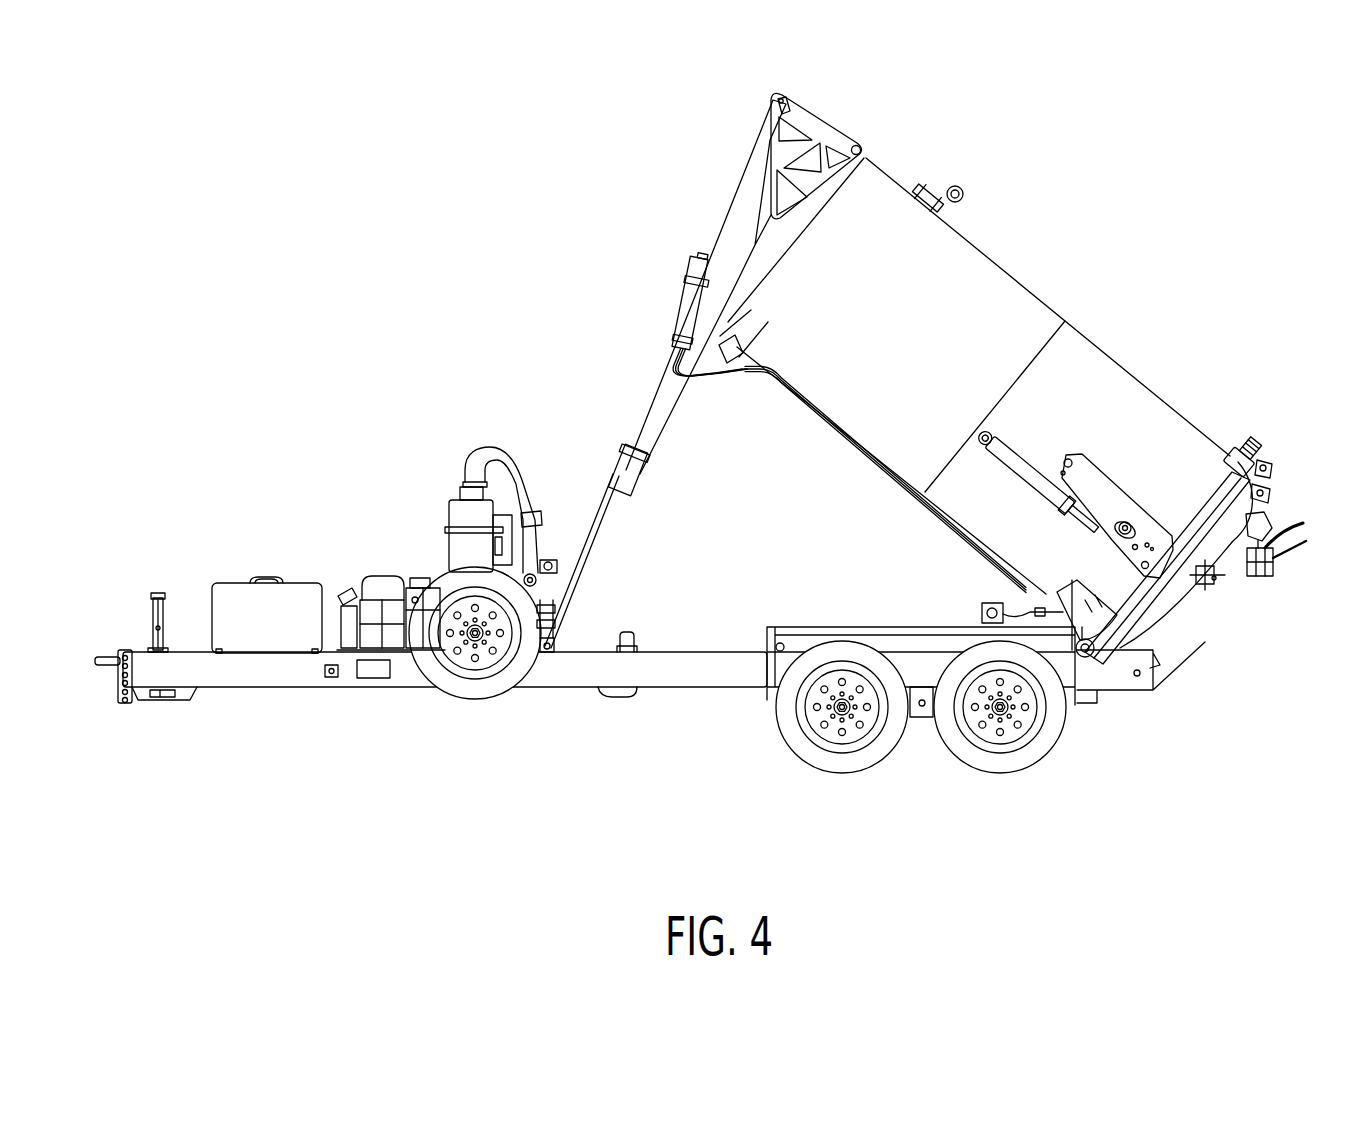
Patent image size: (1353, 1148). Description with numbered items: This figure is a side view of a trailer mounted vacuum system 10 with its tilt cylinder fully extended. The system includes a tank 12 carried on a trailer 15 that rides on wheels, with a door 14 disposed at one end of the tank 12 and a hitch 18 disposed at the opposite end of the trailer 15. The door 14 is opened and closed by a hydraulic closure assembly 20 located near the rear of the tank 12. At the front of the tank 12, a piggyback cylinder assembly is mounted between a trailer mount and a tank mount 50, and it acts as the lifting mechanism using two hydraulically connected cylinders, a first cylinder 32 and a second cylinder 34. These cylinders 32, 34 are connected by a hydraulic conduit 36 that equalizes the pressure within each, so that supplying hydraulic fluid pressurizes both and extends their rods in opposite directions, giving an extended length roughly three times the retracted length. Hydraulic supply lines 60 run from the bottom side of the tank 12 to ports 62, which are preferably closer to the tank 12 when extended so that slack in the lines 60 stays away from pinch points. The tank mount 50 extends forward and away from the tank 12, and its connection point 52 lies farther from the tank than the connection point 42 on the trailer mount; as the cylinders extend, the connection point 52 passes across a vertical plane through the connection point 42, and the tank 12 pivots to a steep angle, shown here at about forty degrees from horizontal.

The trailer mounted vacuum system 10 is at (699, 409).
The tank 12 is at (985, 403).
The door 14 is at (1144, 548).
The trailer 15 is at (664, 670).
The hitch 18 is at (144, 677).
The hydraulic closure assembly 20 is at (1105, 469).
The first cylinder 32 is at (656, 301).
The second cylinder 34 is at (665, 374).
The hydraulic conduit 36 is at (614, 416).
The connection point 42 is at (516, 673).
The tank mount 50 is at (843, 156).
The connection point 52 is at (743, 79).
The hydraulic supply lines 60 is at (874, 479).
The ports 62 is at (662, 333).